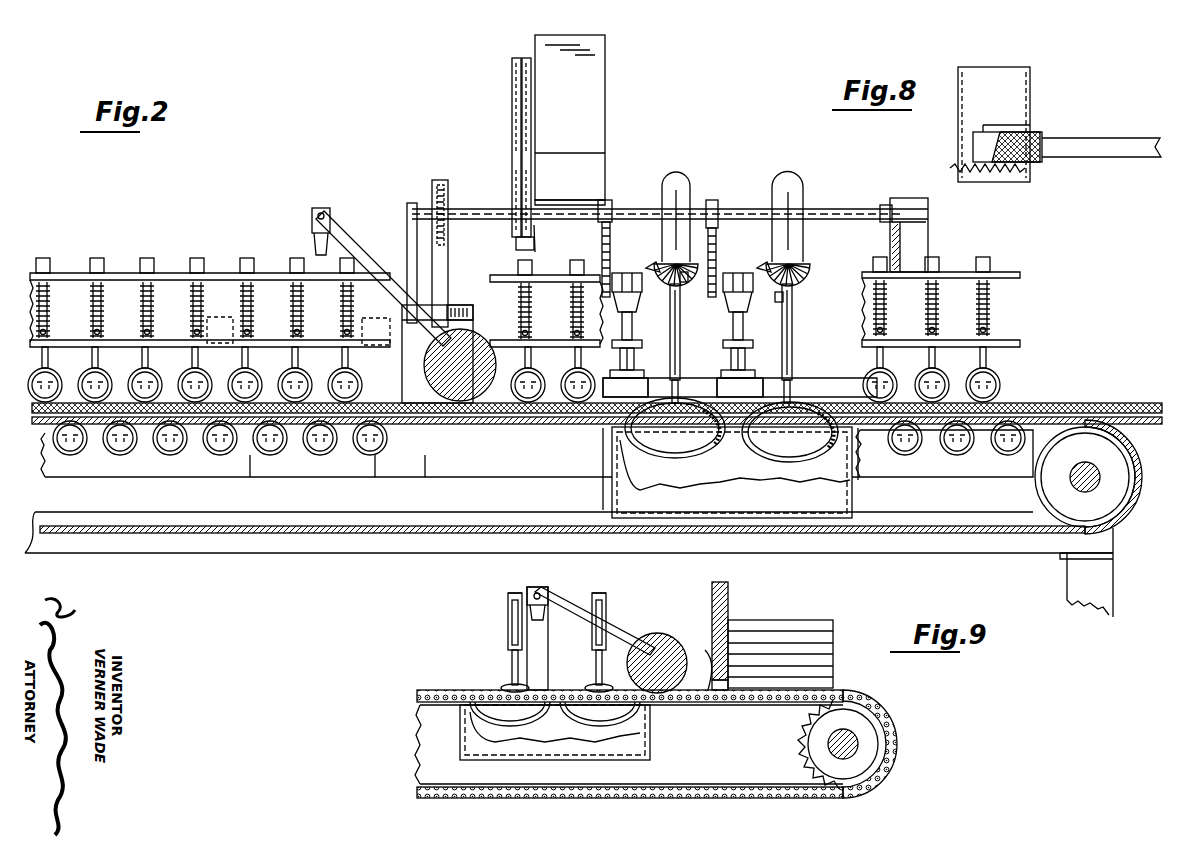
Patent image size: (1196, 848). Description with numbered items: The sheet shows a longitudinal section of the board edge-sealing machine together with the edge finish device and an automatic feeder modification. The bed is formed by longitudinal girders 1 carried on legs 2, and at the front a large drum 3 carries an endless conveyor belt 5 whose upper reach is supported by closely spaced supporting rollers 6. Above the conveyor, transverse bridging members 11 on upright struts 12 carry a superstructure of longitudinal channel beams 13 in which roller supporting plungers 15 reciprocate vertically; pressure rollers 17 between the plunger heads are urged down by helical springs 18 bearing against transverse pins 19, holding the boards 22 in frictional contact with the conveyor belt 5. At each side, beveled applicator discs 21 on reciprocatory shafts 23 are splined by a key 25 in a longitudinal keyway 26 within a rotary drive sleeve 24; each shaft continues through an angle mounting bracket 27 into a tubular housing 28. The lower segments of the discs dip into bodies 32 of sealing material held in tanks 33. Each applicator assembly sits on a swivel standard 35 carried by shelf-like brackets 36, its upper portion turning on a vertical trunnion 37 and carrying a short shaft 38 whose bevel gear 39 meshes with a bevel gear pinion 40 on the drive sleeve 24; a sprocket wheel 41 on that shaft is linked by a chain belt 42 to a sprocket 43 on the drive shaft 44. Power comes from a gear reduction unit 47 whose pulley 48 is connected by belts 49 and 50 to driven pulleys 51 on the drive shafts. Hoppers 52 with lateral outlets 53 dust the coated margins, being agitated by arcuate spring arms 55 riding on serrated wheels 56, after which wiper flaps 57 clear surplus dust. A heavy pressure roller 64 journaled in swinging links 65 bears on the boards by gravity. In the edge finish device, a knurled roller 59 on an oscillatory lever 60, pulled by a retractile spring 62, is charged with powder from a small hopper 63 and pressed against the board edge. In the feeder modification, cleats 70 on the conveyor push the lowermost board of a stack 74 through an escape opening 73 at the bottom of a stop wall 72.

In FIG. 2, the longitudinal girders 1 is at (922, 468).
In FIG. 2, the legs 2 is at (1068, 580).
In FIG. 2, the drum 3 is at (1133, 480).
In FIG. 2, the conveyor belt 5 is at (95, 556).
In FIG. 2, the supporting rollers 6 is at (896, 455).
In FIG. 2, the transverse bridging members 11 is at (920, 225).
In FIG. 2, the upright struts 12 is at (925, 258).
In FIG. 2, the longitudinal channel beams 13 is at (168, 274).
In FIG. 2, the roller supporting plungers 15 is at (40, 360).
In FIG. 2, the pressure rollers 17 is at (155, 456).
In FIG. 2, the helical springs 18 is at (88, 290).
In FIG. 2, the transverse pins 19 is at (48, 333).
In FIG. 2, the applicator discs 21 is at (690, 445).
In FIG. 9, the applicator discs 21 is at (508, 689).
In FIG. 2, the boards 22 is at (93, 444).
In FIG. 8, the boards 22 is at (1098, 158).
In FIG. 2, the reciprocatory shafts 23 is at (680, 388).
In FIG. 9, the reciprocatory shafts 23 is at (518, 665).
In FIG. 2, the rotary drive sleeve 24 is at (670, 332).
In FIG. 9, the rotary drive sleeve 24 is at (508, 620).
In FIG. 2, the key 25 is at (634, 362).
In FIG. 9, the key 25 is at (508, 646).
In FIG. 2, the longitudinal keyway 26 is at (670, 315).
In FIG. 9, the longitudinal keyway 26 is at (508, 608).
In FIG. 2, the angle mounting bracket 27 is at (652, 265).
In FIG. 2, the tubular housing 28 is at (664, 185).
In FIG. 2, the bodies of sealing material 32 is at (797, 476).
In FIG. 9, the bodies of sealing material 32 is at (640, 730).
In FIG. 2, the tanks 33 is at (612, 490).
In FIG. 9, the tanks 33 is at (650, 752).
In FIG. 2, the swivel standard 35 is at (613, 360).
In FIG. 2, the shelf-like brackets 36 is at (683, 389).
In FIG. 2, the vertical trunnion 37 is at (620, 315).
In FIG. 2, the shaft 38 is at (626, 272).
In FIG. 2, the bevel gear 39 is at (686, 280).
In FIG. 2, the bevel gear pinion 40 is at (660, 262).
In FIG. 2, the sprocket wheel 41 is at (670, 300).
In FIG. 2, the chain belt 42 is at (716, 250).
In FIG. 2, the sprocket 43 is at (718, 200).
In FIG. 2, the drive shaft 44 is at (845, 208).
In FIG. 2, the gear reduction unit 47 is at (600, 100).
In FIG. 2, the pulley 48 is at (512, 84).
In FIG. 2, the belt 49 is at (522, 155).
In FIG. 2, the belt 50 is at (538, 168).
In FIG. 2, the driven pulleys 51 is at (518, 250).
In FIG. 2, the hoppers 52 is at (460, 304).
In FIG. 2, the lateral outlets 53 is at (445, 405).
In FIG. 2, the arcuate spring arms 55 is at (448, 256).
In FIG. 2, the serrated wheels 56 is at (445, 185).
In FIG. 2, the wiper flaps 57 is at (250, 478).
In FIG. 8, the knurled roller 59 is at (1030, 135).
In FIG. 8, the oscillatory lever 60 is at (1028, 162).
In FIG. 8, the retractile spring 62 is at (985, 173).
In FIG. 8, the small hopper 63 is at (1028, 84).
In FIG. 2, the heavy pressure roller 64 is at (488, 400).
In FIG. 9, the heavy pressure roller 64 is at (655, 633).
In FIG. 2, the swinging links 65 is at (368, 262).
In FIG. 9, the swinging links 65 is at (572, 610).
In FIG. 9, the cleats 70 is at (455, 799).
In FIG. 9, the stop wall 72 is at (730, 606).
In FIG. 9, the escape opening 73 is at (706, 650).
In FIG. 9, the stack 74 is at (800, 620).